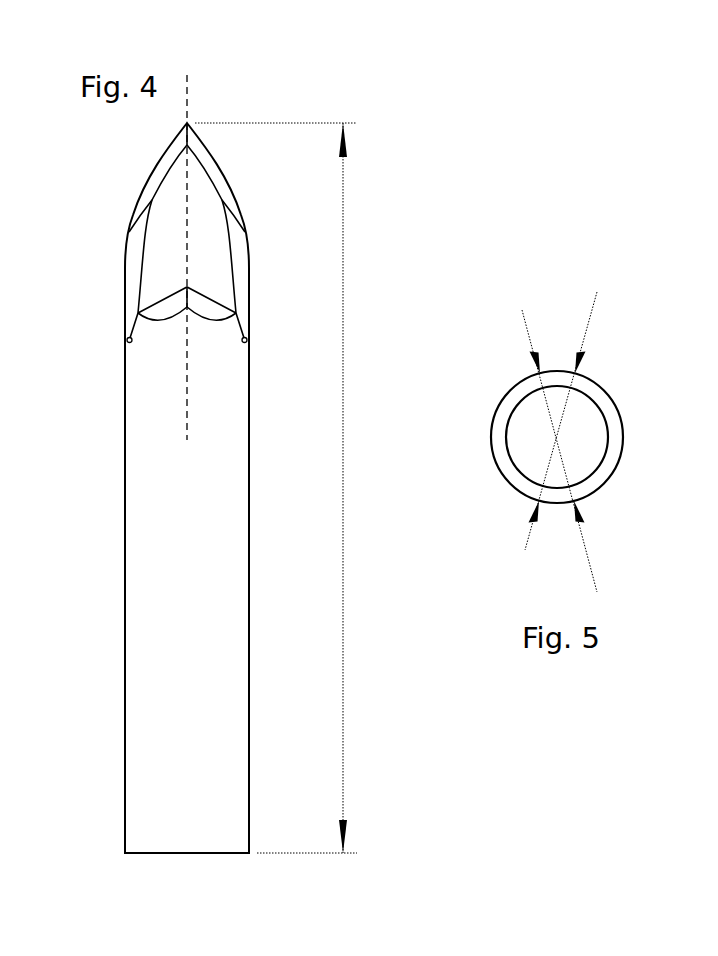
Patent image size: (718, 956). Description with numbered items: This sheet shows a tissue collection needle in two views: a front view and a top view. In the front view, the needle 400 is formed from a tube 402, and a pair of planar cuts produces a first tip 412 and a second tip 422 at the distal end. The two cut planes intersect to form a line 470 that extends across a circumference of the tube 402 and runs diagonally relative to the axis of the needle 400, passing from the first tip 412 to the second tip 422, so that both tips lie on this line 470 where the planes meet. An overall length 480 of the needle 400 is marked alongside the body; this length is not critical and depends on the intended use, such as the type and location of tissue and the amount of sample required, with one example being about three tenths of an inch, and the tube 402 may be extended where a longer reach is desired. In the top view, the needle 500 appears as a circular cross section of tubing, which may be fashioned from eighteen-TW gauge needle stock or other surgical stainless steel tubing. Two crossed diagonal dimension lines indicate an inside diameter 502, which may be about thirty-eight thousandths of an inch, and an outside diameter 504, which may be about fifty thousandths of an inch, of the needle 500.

In FIG. 4, the needle 400 is at (229, 464).
In FIG. 4, the tube 402 is at (125, 498).
In FIG. 4, the first tip 412 is at (191, 121).
In FIG. 4, the second tip 422 is at (188, 288).
In FIG. 4, the line 470 is at (190, 400).
In FIG. 4, the overall length 480 is at (343, 262).
In FIG. 5, the needle 500 is at (623, 437).
In FIG. 5, the inside diameter 502 is at (588, 322).
In FIG. 5, the outside diameter 504 is at (588, 557).